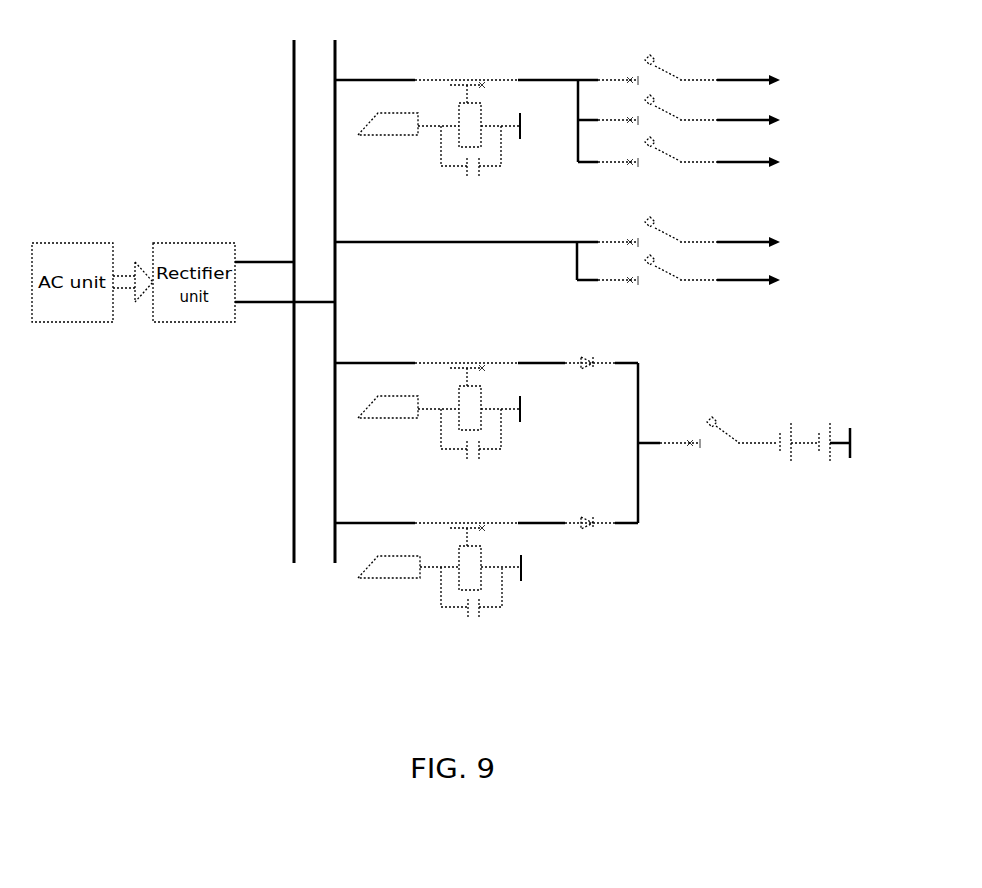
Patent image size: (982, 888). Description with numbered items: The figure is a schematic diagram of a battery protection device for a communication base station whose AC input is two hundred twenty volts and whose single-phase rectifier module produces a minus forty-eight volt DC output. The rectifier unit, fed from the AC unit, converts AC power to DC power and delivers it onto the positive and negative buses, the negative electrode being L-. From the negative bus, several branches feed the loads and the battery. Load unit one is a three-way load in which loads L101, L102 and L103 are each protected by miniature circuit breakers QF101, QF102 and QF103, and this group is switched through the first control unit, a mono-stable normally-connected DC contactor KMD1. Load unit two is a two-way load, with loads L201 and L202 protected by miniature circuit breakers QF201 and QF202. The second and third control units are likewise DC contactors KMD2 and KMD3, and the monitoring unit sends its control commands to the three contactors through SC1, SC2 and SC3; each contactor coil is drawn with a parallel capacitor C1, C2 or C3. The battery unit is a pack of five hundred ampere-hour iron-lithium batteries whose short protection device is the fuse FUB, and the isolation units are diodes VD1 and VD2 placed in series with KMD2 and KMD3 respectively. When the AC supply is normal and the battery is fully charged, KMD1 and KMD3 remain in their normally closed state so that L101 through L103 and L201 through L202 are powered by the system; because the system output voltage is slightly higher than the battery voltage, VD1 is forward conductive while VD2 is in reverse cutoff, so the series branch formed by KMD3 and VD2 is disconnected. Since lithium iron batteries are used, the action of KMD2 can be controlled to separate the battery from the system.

The negative electrode of the DC power supply L- is at (336, 287).
The DC contactor KMD1 is at (466, 110).
The DC contactor KMD2 is at (486, 432).
The DC contactor KMD3 is at (486, 544).
The control command line SC1 is at (452, 126).
The control command line SC2 is at (452, 409).
The control command line SC3 is at (453, 568).
The first capacitor C1 is at (471, 160).
The second capacitor C2 is at (471, 443).
The third capacitor C3 is at (471, 600).
The miniature circuit breaker QF101 is at (657, 70).
The miniature circuit breaker QF102 is at (657, 110).
The miniature circuit breaker QF103 is at (657, 152).
The miniature circuit breaker QF201 is at (657, 232).
The miniature circuit breaker QF202 is at (657, 270).
The load L101 is at (769, 80).
The load L102 is at (769, 120).
The load L103 is at (769, 162).
The load L201 is at (769, 242).
The load L202 is at (769, 280).
The diode VD1 is at (590, 353).
The diode VD2 is at (590, 513).
The fuse FUB is at (754, 440).